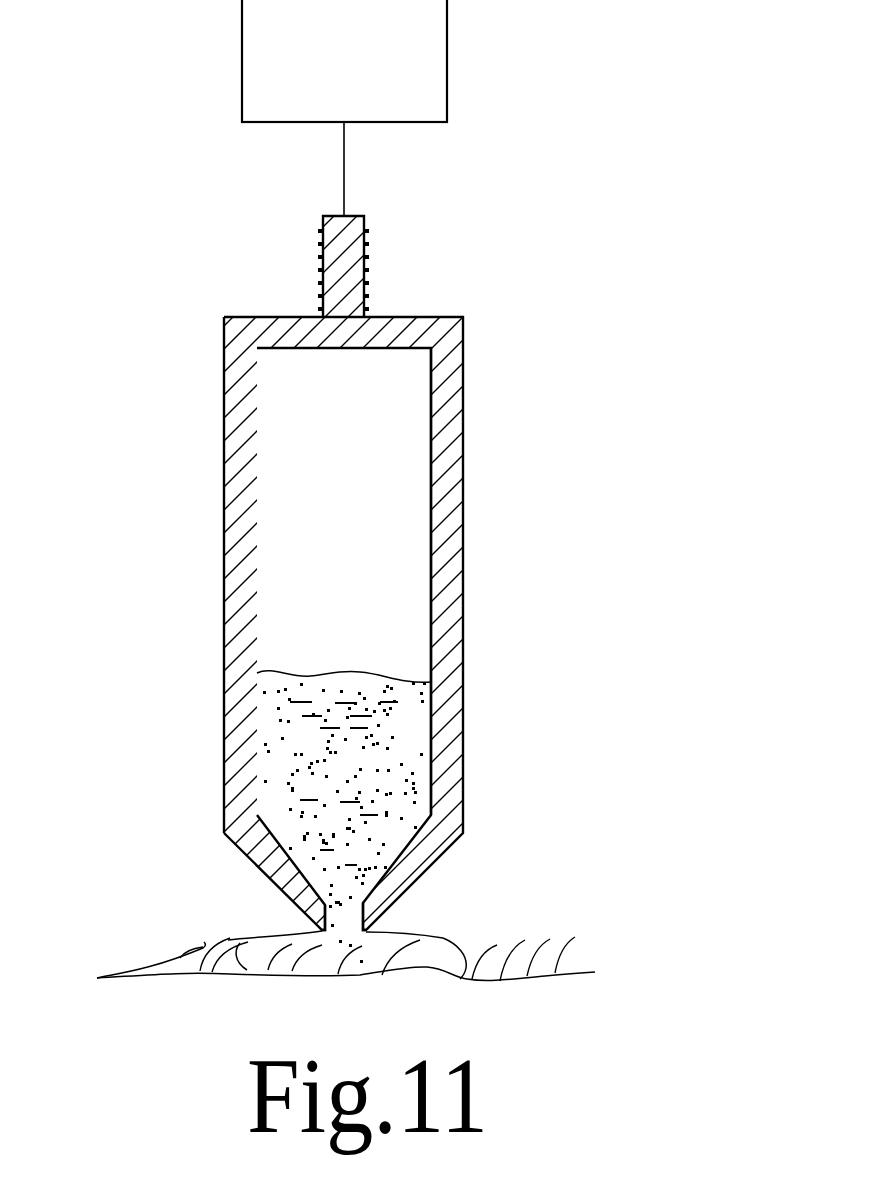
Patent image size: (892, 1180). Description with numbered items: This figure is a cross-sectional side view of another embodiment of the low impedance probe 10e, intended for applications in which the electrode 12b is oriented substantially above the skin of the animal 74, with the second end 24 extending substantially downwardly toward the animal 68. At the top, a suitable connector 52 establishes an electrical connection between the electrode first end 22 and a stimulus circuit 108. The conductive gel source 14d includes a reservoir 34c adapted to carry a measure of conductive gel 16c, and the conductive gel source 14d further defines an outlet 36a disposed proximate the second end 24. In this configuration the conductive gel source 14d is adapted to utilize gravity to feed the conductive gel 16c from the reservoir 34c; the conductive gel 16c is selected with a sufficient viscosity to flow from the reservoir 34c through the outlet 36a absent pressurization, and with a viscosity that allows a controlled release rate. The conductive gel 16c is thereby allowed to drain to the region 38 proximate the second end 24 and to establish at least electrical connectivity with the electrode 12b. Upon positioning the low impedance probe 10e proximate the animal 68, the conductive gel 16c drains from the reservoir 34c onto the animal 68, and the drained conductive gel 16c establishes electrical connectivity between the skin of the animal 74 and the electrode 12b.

The stimulus circuit 108 is at (447, 48).
The connector 52 is at (367, 248).
The electrode first end 22 is at (224, 388).
The electrode 12b is at (463, 390).
The low impedance probe 10e is at (178, 538).
The reservoir 34c is at (435, 585).
The conductive gel 16c is at (395, 775).
The second end 24 is at (270, 878).
The outlet 36a is at (322, 930).
The conductive gel source 14d is at (470, 923).
The animal 68 is at (413, 1027).
The skin of an animal 74 is at (547, 977).
The region 38 is at (203, 1013).